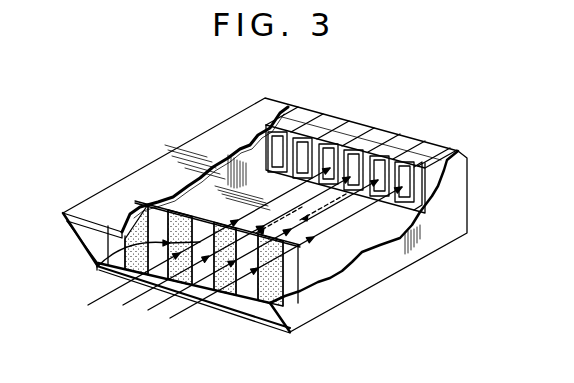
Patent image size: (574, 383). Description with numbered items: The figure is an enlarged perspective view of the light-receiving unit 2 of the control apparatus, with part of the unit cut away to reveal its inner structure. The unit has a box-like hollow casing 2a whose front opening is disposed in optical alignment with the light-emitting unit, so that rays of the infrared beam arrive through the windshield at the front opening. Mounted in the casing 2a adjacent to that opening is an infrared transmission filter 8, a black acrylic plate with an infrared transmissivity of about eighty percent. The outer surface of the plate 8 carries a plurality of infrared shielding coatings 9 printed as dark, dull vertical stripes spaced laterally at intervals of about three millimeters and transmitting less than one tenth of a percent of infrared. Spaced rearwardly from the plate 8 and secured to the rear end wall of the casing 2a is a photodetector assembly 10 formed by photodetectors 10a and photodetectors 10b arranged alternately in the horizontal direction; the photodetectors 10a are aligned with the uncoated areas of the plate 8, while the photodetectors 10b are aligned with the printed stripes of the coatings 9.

The light-receiving unit 2 is at (180, 109).
The casing 2a is at (382, 268).
The infrared transmission filter 8 is at (303, 264).
The infrared shielding coatings 9 is at (106, 265).
The photodetector assembly 10 is at (362, 137).
The photodetectors 10a is at (333, 140).
The photodetectors 10b is at (356, 147).